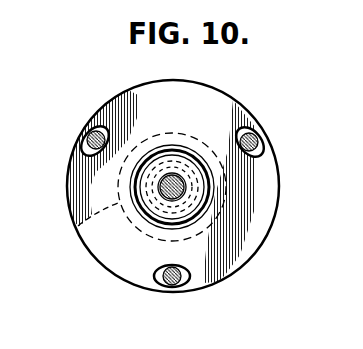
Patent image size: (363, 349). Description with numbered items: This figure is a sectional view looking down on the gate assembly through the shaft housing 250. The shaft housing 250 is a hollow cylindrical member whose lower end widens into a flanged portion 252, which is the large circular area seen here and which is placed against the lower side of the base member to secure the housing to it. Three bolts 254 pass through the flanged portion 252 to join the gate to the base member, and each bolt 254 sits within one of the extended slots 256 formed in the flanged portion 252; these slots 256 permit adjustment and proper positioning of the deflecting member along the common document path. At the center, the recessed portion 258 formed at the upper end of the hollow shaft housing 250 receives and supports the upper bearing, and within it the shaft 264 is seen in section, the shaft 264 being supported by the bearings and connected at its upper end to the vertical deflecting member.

The shaft housing 250 is at (80, 224).
The flanged portion 252 is at (128, 97).
The bolts 254 is at (87, 134).
The extended slots 256 is at (84, 151).
The recessed portion 258 is at (208, 196).
The shaft 264 is at (172, 173).